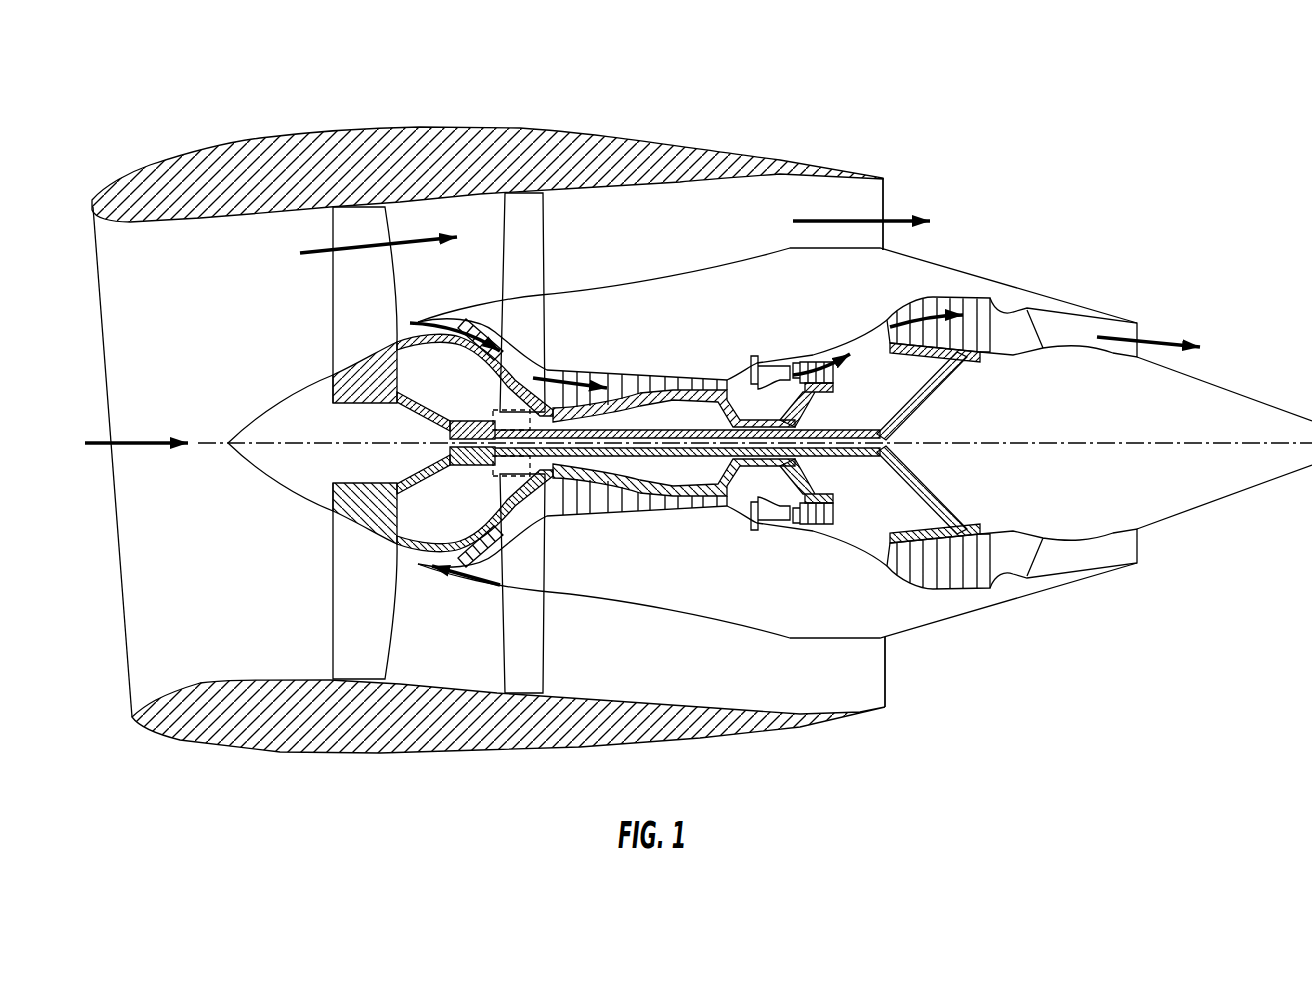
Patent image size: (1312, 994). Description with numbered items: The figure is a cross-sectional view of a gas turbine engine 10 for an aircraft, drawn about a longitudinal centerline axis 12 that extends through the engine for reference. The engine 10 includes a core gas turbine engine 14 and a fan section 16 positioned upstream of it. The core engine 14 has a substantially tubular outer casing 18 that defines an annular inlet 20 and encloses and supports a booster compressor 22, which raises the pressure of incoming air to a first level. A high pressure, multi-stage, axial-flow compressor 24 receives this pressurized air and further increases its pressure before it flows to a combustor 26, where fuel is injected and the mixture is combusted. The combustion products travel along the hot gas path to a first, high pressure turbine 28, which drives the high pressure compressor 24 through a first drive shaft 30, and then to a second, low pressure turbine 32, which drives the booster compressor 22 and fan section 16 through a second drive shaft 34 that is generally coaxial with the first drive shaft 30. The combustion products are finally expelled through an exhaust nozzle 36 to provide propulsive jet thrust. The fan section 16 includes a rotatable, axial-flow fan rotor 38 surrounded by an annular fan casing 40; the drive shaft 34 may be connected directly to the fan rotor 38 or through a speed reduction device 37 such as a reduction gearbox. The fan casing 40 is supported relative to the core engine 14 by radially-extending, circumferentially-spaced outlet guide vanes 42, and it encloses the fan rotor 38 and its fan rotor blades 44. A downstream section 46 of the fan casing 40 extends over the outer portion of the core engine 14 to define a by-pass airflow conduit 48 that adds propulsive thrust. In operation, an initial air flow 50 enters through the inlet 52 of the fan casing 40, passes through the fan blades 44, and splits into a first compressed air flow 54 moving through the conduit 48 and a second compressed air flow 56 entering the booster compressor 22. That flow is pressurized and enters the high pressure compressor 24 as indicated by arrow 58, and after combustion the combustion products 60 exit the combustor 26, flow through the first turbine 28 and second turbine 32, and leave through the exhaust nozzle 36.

The gas turbine engine 10 is at (1020, 168).
The longitudinal centerline axis 12 is at (1078, 442).
The core gas turbine engine 14 is at (702, 338).
The fan section 16 is at (487, 157).
The outer casing 18 is at (727, 627).
The annular inlet 20 is at (440, 573).
The booster compressor 22 is at (500, 527).
The high pressure compressor 24 is at (577, 508).
The combustor 26 is at (773, 512).
The first (high pressure) turbine 28 is at (833, 520).
The first (high pressure) drive shaft 30 is at (815, 401).
The second (low pressure) turbine 32 is at (980, 584).
The second (low pressure) drive shaft 34 is at (508, 427).
The exhaust nozzle 36 is at (1139, 332).
The speed reduction device 37 is at (513, 407).
The fan rotor 38 is at (393, 404).
The fan casing 40 is at (383, 755).
The outlet guide vanes 42 is at (546, 257).
The fan rotor blades 44 is at (333, 623).
The downstream section of fan casing 46 is at (783, 168).
The by-pass airflow conduit 48 is at (692, 236).
The initial air flow 50 is at (110, 440).
The inlet 52 is at (130, 685).
The first compressed air flow 54 is at (347, 243).
The second compressed air flow 56 is at (423, 310).
The air flow entering high pressure compressor 58 is at (565, 366).
The combustion products 60 is at (820, 354).